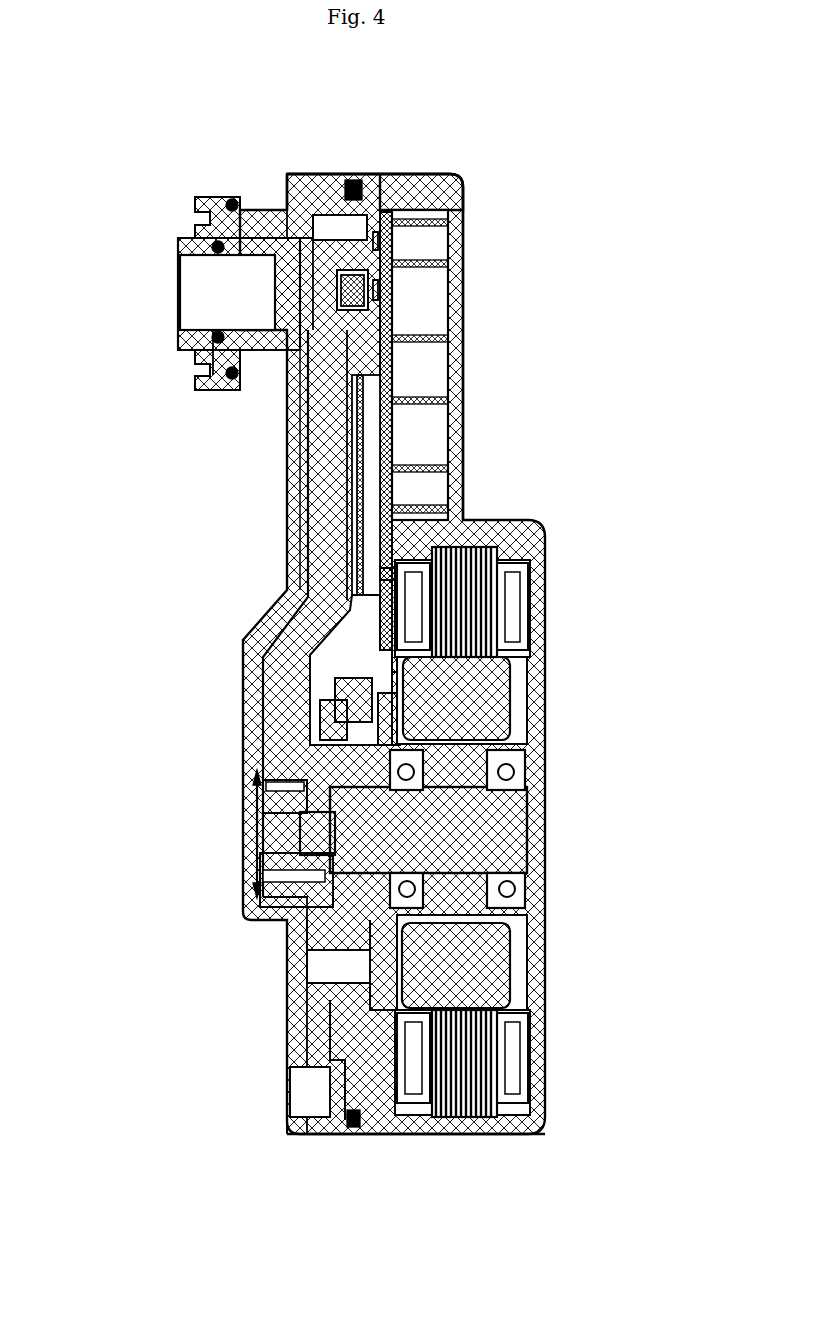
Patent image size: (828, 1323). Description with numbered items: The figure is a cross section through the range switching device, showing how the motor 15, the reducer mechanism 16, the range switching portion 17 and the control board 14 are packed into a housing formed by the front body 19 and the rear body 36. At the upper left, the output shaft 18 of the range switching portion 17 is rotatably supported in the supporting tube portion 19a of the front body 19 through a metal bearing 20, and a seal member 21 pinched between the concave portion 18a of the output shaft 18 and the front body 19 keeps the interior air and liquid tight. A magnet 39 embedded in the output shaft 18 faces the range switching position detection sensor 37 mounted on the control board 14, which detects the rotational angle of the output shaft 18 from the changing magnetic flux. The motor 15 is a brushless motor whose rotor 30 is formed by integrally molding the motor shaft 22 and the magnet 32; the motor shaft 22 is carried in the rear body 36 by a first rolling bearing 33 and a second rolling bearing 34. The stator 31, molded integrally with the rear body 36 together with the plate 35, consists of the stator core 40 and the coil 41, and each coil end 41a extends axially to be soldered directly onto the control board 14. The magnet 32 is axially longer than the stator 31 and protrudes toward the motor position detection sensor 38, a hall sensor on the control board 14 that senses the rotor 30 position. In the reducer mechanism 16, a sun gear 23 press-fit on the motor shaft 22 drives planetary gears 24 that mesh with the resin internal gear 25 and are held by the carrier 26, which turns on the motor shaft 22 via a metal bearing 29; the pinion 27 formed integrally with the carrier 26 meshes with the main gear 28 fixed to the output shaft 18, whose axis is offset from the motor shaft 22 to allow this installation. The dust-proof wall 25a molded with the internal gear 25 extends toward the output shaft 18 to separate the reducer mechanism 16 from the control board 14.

The control board 14 is at (385, 343).
The motor 15 is at (491, 1150).
The reducer mechanism 16 is at (238, 972).
The range switching portion 17 is at (156, 236).
The output shaft 18 is at (200, 290).
The concave portion 18a is at (215, 345).
The front body 19 is at (330, 183).
The supporting tube portion 19a is at (268, 197).
The metal bearing 20 is at (291, 222).
The seal member 21 is at (218, 342).
The motor shaft 22 is at (490, 838).
The sun gear 23 is at (347, 882).
The planetary gears 24 is at (335, 697).
The internal gear 25 is at (335, 1005).
The dust-proof wall 25a is at (368, 400).
The carrier 26 is at (325, 722).
The pinion 27 is at (288, 777).
The main gear 28 is at (325, 480).
The metal bearing 29 is at (257, 830).
The rotor 30 is at (503, 683).
The stator 31 is at (503, 628).
The magnet 32 is at (535, 1012).
The first rolling bearing 33 is at (412, 887).
The second rolling bearing 34 is at (525, 888).
The plate 35 is at (522, 768).
The rear body 36 is at (440, 195).
The range switching position detection sensor 37 is at (375, 300).
The motor position detection sensor 38 is at (400, 676).
The magnet 39 is at (345, 276).
The stator core 40 is at (470, 560).
The coil 41 is at (512, 600).
The coil end 41a is at (380, 573).